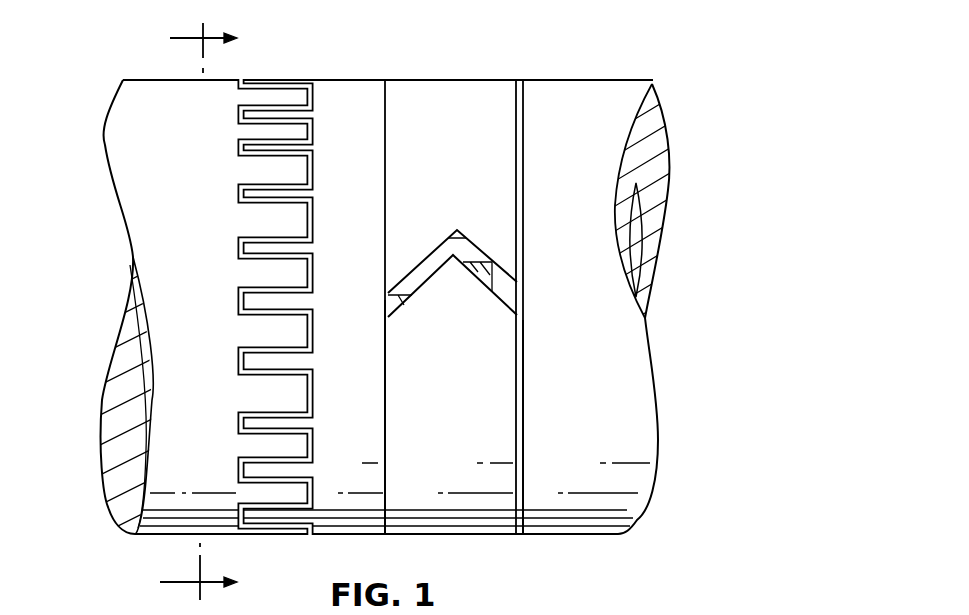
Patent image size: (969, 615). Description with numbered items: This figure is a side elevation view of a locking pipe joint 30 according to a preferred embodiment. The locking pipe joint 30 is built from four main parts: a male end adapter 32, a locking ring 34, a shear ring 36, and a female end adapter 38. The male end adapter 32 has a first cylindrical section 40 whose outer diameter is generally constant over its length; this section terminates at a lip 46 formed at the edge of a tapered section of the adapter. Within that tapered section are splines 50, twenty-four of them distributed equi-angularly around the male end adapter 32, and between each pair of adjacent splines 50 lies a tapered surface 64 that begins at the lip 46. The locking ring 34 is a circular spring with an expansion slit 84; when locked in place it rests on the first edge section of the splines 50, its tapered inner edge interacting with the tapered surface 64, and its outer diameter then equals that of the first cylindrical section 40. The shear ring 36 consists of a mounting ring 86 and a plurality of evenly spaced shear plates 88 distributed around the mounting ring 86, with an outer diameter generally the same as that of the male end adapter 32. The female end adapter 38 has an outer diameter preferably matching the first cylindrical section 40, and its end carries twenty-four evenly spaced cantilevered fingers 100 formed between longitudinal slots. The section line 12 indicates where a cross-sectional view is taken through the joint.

The section line 12- 12 is at (197, 29).
The locking pipe joint 30 is at (668, 43).
The male end adapter 32 is at (600, 103).
The locking ring 34 is at (455, 100).
The shear ring 36 is at (338, 79).
The female end adapter 38 is at (134, 98).
The first cylindrical section 40 is at (585, 500).
The lip 46 is at (525, 362).
The splines 50 is at (310, 393).
The tapered surface 64 is at (467, 243).
The expansion slit 84 is at (483, 252).
The mounting ring 86 is at (376, 433).
The shear plates 88 is at (237, 212).
The cantilevered fingers 100 is at (295, 279).